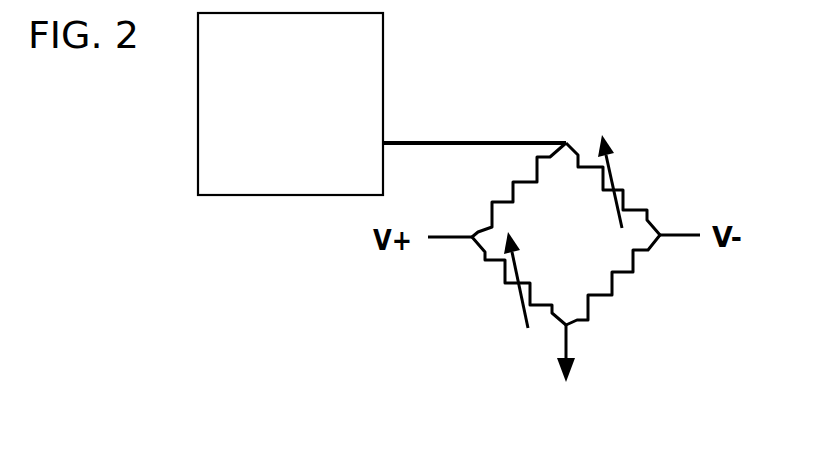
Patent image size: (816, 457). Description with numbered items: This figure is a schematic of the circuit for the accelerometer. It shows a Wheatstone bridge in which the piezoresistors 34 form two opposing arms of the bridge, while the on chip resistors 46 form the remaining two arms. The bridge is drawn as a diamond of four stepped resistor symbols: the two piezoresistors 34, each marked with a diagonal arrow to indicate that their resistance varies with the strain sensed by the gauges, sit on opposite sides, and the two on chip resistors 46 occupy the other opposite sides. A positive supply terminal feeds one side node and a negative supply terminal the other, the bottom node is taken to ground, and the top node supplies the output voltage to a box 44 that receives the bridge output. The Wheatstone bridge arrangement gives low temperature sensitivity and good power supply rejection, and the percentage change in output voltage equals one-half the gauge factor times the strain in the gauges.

The amplifier / signal conditioning circuit 44 is at (383, 73).
The on chip resistors 46 is at (510, 188).
The piezoresistors 34 is at (625, 193).